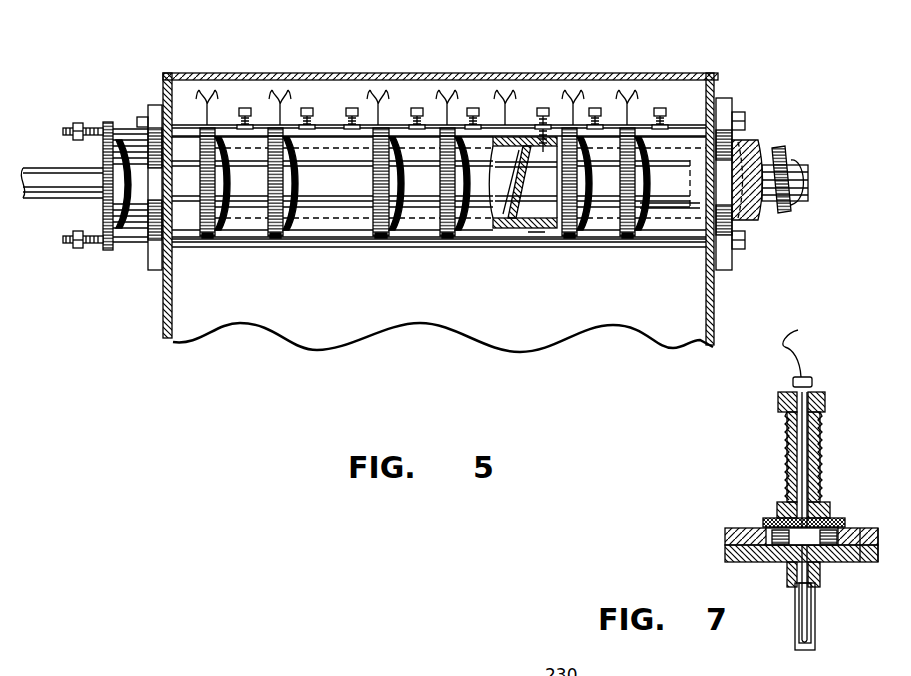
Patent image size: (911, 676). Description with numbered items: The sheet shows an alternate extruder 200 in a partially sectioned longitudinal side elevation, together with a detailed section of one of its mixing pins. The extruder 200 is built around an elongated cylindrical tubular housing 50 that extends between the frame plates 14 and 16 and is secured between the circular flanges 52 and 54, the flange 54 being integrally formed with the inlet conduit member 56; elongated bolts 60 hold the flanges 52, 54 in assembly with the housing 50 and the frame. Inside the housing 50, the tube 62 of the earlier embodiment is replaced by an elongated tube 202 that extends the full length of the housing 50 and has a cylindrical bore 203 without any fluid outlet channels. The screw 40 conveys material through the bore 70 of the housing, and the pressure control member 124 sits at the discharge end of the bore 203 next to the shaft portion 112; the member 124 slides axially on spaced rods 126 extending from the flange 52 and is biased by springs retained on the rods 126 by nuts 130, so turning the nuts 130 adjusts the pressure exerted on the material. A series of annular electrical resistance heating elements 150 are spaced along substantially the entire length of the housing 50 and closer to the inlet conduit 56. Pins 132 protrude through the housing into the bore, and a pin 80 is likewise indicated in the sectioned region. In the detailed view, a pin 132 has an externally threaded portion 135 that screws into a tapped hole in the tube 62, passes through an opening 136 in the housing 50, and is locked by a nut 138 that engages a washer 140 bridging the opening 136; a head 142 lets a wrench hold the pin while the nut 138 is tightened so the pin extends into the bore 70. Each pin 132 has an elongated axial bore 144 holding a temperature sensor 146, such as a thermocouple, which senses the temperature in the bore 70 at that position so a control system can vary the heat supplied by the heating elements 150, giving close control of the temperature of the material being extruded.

In FIG. 5, the extruder 200 is at (442, 180).
In FIG. 5, the plate 14 is at (163, 309).
In FIG. 5, the plate 16 is at (715, 303).
In FIG. 5, the elongated bolts 60 is at (176, 77).
In FIG. 5, the cylindrical tubular housing 50 is at (326, 240).
In FIG. 7, the cylindrical tubular housing 50 is at (725, 535).
In FIG. 7, the tube 62 is at (725, 554).
In FIG. 7, the bore 70 is at (852, 562).
In FIG. 5, the cylindrical bore 203 is at (557, 228).
In FIG. 5, the elongated tube 202 is at (513, 232).
In FIG. 5, the heating elements 150 is at (270, 183).
In FIG. 5, the mixing pin 132 is at (242, 101).
In FIG. 7, the mixing pin 132 is at (806, 490).
In FIG. 5, the sensor probe 80 is at (544, 107).
In FIG. 5, the shaft portion 112 is at (52, 178).
In FIG. 5, the pressure control member 124 is at (133, 226).
In FIG. 5, the rods 126 is at (66, 130).
In FIG. 5, the nuts 130 is at (80, 122).
In FIG. 5, the circular flange 52 is at (154, 103).
In FIG. 5, the circular flange 54 is at (726, 98).
In FIG. 5, the inlet conduit member 56 is at (756, 136).
In FIG. 5, the screw 40 is at (795, 201).
In FIG. 7, the head 142 is at (778, 402).
In FIG. 7, the externally threaded portion 135 is at (787, 469).
In FIG. 7, the opening 136 is at (777, 510).
In FIG. 7, the nut 138 is at (828, 504).
In FIG. 7, the washer 140 is at (846, 520).
In FIG. 7, the axial bore 144 is at (804, 598).
In FIG. 7, the temperature sensor 146 is at (813, 618).